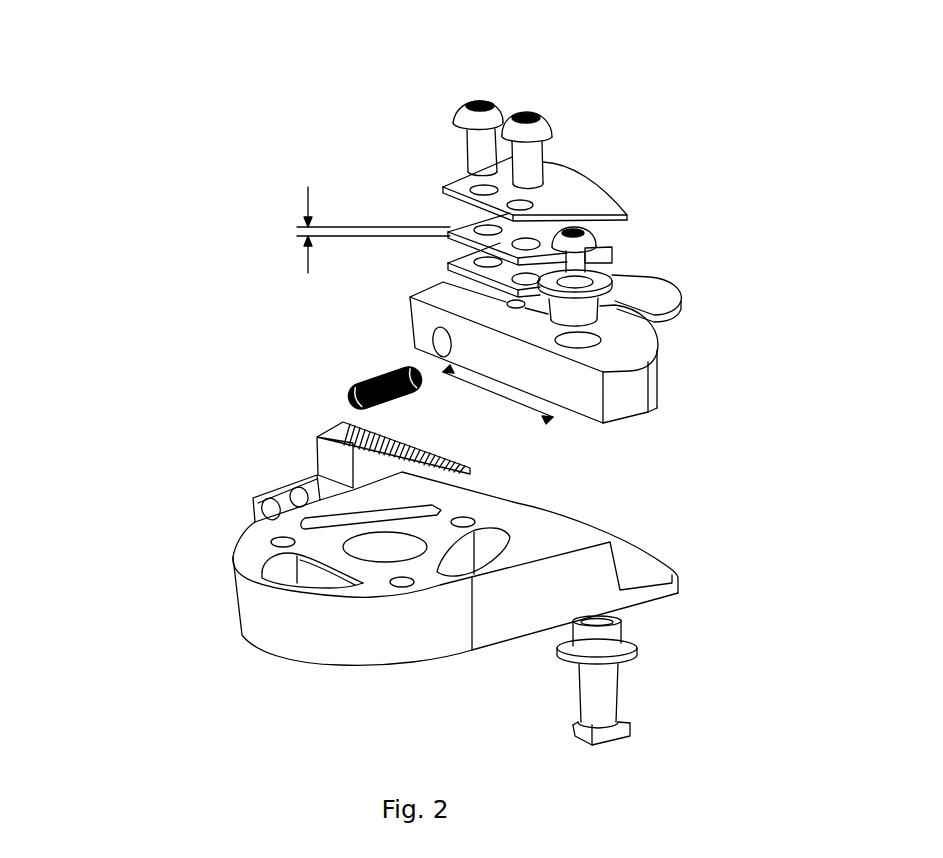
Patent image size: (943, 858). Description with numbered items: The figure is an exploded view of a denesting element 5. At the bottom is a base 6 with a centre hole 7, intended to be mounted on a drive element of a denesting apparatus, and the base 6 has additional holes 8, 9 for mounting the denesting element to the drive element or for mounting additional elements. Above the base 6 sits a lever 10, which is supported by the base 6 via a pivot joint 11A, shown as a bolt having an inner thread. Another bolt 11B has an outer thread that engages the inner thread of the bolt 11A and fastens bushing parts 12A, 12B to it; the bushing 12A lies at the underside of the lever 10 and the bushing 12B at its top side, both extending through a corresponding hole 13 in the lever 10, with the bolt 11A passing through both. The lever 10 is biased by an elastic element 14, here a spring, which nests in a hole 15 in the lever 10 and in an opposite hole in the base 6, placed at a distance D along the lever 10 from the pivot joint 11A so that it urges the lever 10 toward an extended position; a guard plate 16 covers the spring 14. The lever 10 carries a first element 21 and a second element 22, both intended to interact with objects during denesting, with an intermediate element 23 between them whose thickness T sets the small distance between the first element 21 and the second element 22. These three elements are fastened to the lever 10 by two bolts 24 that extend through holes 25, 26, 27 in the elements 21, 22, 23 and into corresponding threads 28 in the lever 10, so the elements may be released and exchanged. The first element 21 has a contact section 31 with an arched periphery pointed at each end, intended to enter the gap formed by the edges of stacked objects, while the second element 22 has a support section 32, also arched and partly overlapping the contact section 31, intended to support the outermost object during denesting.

The denesting element 5 is at (197, 543).
The base 6 is at (267, 620).
The centre hole 7 is at (380, 548).
The hole 8 is at (400, 585).
The hole 9 is at (437, 577).
The lever 10 is at (627, 408).
The pivot joint 11A is at (603, 695).
The bolt 11B is at (680, 307).
The bushing 12A is at (603, 640).
The bushing 12B is at (665, 383).
The hole 13 is at (580, 343).
The elastic element 14 is at (350, 387).
The hole 15 is at (422, 341).
The guard plate 16 is at (350, 430).
The first element 21 is at (570, 198).
The second element 22 is at (528, 305).
The intermediate element 23 is at (608, 248).
The bolt 24 is at (490, 117).
The hole 25 is at (443, 188).
The hole 26 is at (449, 231).
The hole 27 is at (450, 266).
The thread 28 is at (510, 303).
The contact section 31 is at (613, 200).
The support section 32 is at (665, 288).